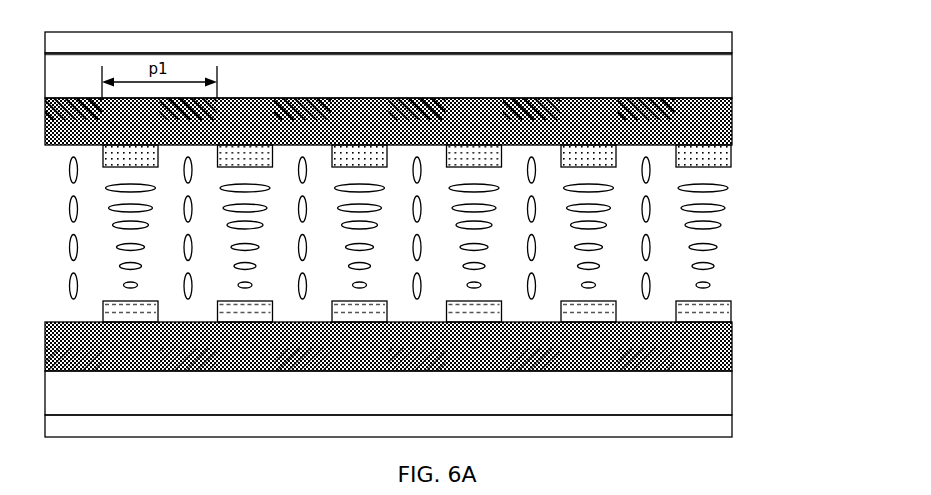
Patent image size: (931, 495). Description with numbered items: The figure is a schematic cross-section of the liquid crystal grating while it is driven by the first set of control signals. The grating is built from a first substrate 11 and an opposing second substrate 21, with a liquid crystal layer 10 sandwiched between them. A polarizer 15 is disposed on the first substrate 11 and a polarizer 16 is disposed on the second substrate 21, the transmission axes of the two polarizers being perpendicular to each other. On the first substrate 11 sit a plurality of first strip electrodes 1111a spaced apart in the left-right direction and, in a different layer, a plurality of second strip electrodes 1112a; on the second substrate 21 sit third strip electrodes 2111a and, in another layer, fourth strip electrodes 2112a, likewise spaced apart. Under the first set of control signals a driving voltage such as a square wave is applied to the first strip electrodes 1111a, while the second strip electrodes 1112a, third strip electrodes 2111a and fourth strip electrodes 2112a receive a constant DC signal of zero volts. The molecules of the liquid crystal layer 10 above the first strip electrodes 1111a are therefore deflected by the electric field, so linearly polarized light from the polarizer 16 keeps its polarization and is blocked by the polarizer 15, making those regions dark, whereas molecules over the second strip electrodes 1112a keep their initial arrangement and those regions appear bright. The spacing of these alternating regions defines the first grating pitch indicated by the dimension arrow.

The polarizer 15 is at (695, 43).
The first substrate 11 is at (695, 80).
The first strip electrodes 1111a is at (670, 115).
The second strip electrodes 1112a is at (730, 157).
The liquid crystal layer 10 is at (723, 225).
The fourth strip electrodes 2112a is at (732, 300).
The third strip electrodes 2111a is at (677, 355).
The second substrate 21 is at (727, 385).
The polarizer 16 is at (722, 428).